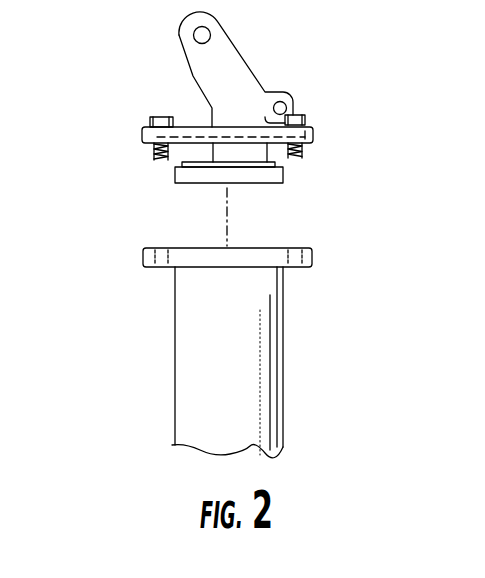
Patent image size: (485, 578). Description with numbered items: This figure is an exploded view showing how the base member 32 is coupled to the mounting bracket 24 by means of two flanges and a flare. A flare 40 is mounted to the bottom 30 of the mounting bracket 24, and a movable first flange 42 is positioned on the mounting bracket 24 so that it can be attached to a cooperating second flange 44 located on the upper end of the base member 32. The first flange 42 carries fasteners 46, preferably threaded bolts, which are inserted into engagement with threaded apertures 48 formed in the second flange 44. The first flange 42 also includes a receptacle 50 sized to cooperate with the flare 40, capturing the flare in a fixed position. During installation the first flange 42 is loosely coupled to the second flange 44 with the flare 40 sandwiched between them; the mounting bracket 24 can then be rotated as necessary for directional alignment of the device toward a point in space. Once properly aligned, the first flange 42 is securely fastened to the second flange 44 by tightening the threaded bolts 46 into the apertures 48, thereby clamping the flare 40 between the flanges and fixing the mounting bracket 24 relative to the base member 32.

The mounting bracket 24 is at (251, 70).
The first flange 42 is at (314, 130).
The fasteners 46 is at (150, 120).
The receptacle 50 is at (178, 137).
The bottom of the mounting bracket 30 is at (283, 163).
The flare 40 is at (283, 178).
The threaded apertures 48 is at (160, 249).
The second flange 44 is at (312, 263).
The base member 32 is at (283, 381).